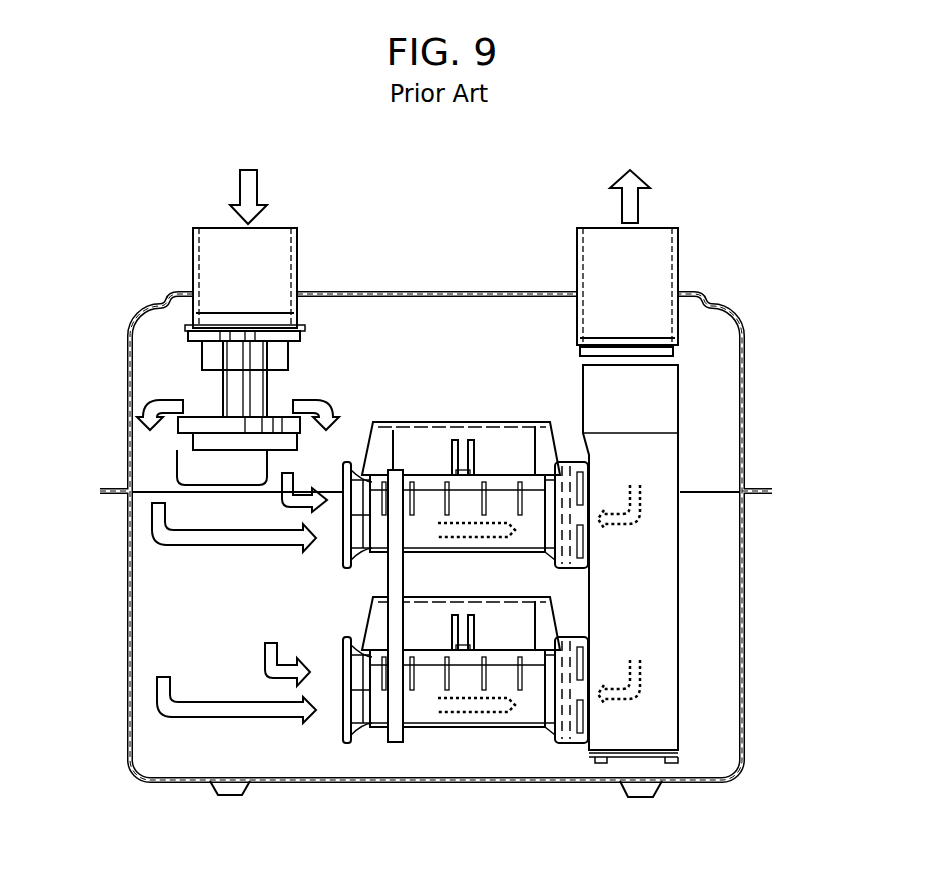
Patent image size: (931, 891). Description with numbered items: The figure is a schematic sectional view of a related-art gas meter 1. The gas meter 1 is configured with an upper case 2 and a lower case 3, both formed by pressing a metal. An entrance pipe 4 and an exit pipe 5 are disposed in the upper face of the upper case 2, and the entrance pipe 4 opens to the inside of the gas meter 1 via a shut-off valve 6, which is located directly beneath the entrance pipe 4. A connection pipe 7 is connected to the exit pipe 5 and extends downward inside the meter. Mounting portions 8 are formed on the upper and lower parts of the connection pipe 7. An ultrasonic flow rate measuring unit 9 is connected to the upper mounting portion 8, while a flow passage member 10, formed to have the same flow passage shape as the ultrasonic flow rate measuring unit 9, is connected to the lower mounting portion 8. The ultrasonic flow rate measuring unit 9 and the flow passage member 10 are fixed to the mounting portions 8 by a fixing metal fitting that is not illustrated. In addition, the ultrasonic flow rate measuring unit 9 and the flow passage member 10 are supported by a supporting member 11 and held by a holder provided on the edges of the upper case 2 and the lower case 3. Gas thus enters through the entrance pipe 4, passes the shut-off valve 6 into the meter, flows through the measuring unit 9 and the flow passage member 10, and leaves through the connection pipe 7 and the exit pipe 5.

The gas meter 1 is at (77, 418).
The upper case 2 is at (128, 433).
The lower case 3 is at (130, 563).
The entrance pipe 4 is at (193, 270).
The exit pipe 5 is at (680, 268).
The shut-off valve 6 is at (210, 465).
The connection pipe 7 is at (663, 632).
The mounting portions 8 is at (598, 685).
The ultrasonic flow rate measuring unit 9 is at (431, 437).
The flow passage member 10 is at (445, 715).
The supporting member 11 is at (395, 738).